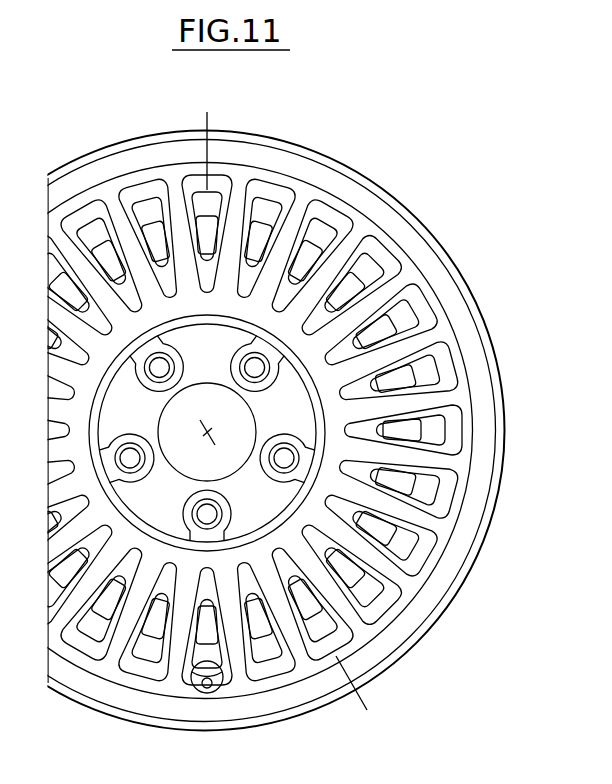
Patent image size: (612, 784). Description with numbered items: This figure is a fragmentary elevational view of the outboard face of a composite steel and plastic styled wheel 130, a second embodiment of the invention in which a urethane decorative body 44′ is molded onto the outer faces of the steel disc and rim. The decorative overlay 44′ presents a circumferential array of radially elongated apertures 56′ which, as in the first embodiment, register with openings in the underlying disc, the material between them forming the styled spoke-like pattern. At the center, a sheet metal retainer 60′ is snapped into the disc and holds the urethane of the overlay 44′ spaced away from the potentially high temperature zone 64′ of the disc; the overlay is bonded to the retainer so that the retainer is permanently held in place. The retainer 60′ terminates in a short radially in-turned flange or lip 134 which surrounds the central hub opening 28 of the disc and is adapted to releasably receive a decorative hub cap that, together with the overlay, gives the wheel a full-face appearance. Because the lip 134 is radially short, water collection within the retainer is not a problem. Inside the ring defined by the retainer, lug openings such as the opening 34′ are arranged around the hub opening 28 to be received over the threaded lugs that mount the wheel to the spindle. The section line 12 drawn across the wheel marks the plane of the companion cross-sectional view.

The section line 12- 12 is at (265, 118).
The wheel construction 130 is at (365, 165).
The urethane decorative body 44′ is at (372, 225).
The apertures 56′ is at (400, 470).
The retainer 60′ is at (219, 329).
The high temperature area 64′ is at (152, 411).
The lug opening 34′ is at (290, 452).
The central opening 28 is at (194, 451).
The radially in-turned flange 134 is at (250, 528).